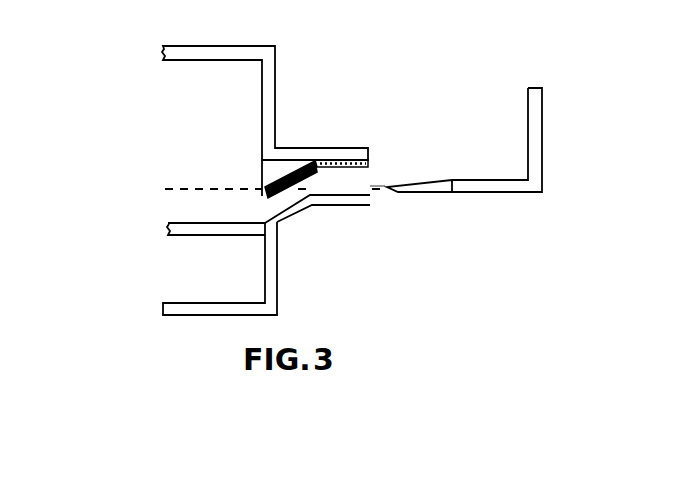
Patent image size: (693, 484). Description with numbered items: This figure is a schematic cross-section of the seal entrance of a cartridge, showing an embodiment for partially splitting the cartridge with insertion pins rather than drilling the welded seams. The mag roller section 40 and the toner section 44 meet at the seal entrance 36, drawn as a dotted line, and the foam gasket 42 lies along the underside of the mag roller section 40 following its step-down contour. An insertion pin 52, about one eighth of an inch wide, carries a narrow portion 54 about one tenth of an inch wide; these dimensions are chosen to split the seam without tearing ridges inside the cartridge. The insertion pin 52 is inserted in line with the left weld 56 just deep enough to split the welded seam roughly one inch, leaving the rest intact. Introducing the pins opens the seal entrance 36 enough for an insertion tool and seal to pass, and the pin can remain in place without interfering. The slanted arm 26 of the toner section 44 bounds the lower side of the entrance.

The mag roller section 40 is at (215, 46).
The foam gasket 42 is at (370, 163).
The seal entrance 36 is at (368, 185).
The insertion pin 52 is at (545, 130).
The narrow portion 54 is at (428, 188).
The left weld 56 is at (195, 188).
The slanted arm 26 is at (278, 202).
The toner section 44 is at (277, 278).